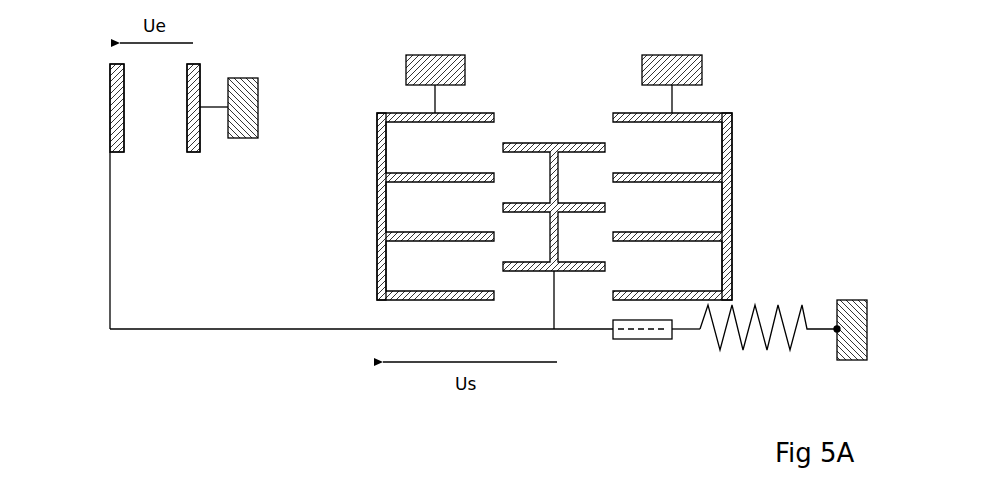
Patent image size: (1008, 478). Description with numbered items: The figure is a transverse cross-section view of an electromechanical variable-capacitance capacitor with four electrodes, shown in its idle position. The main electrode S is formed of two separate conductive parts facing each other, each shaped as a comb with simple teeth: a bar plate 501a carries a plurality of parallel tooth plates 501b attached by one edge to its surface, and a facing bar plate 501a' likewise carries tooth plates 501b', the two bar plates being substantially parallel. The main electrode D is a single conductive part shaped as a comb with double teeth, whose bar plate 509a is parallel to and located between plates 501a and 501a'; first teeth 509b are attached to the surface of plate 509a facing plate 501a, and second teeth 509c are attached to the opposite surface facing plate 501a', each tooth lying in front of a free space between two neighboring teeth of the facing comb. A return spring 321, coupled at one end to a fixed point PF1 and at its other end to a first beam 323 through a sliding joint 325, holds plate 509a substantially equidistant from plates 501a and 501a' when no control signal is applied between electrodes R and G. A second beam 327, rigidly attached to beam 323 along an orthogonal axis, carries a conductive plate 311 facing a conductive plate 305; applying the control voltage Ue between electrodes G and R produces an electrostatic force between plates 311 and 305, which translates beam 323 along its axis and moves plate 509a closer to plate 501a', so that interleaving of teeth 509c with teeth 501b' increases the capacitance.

The electrode R is at (110, 78).
The electrode G is at (200, 70).
The conductive plate 311 is at (120, 135).
The conductive plate 305 is at (198, 142).
The second beam 327 is at (110, 242).
The first beam 323 is at (185, 332).
The sliding joint 325 is at (635, 340).
The return spring 321 is at (752, 305).
The fixed point PF1 is at (835, 333).
The electrode S is at (377, 128).
The electrode D is at (585, 143).
The conductive plate 501a is at (338, 206).
The conductive plate 501a' is at (786, 206).
The conductive plates 501b is at (463, 179).
The conductive plates 501b' is at (710, 179).
The conductive plate 509a is at (553, 143).
The conductive plates 509b is at (530, 152).
The conductive plates 509c is at (585, 152).